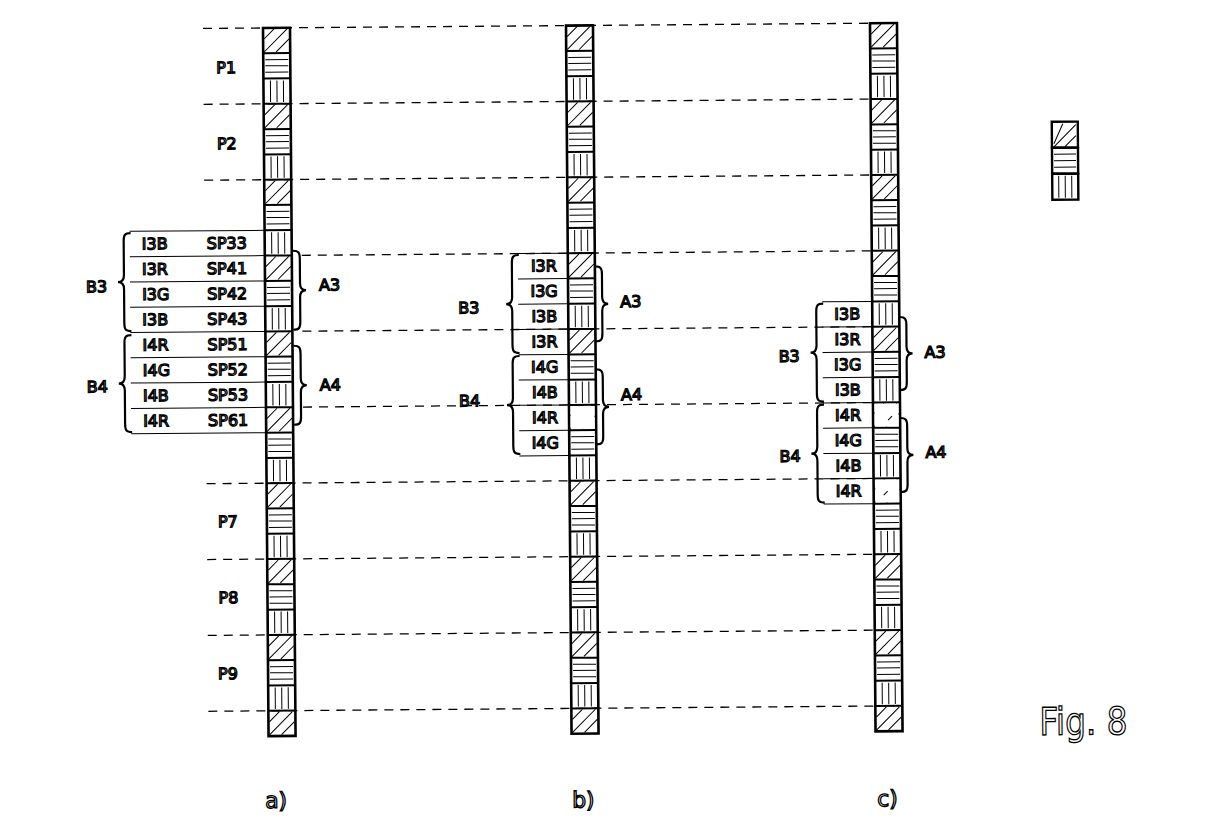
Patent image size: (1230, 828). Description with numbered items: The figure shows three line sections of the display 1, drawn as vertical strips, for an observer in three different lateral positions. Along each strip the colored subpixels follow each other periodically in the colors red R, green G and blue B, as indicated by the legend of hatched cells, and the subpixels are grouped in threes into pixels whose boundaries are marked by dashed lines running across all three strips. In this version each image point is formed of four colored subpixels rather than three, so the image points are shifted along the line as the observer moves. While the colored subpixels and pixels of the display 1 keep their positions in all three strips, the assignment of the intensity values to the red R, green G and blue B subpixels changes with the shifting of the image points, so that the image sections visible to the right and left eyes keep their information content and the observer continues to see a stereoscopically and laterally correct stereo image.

The display 1 is at (290, 687).
The red colored subpixel R is at (1077, 139).
The green colored subpixel G is at (1077, 166).
The blue colored subpixel B is at (1077, 192).